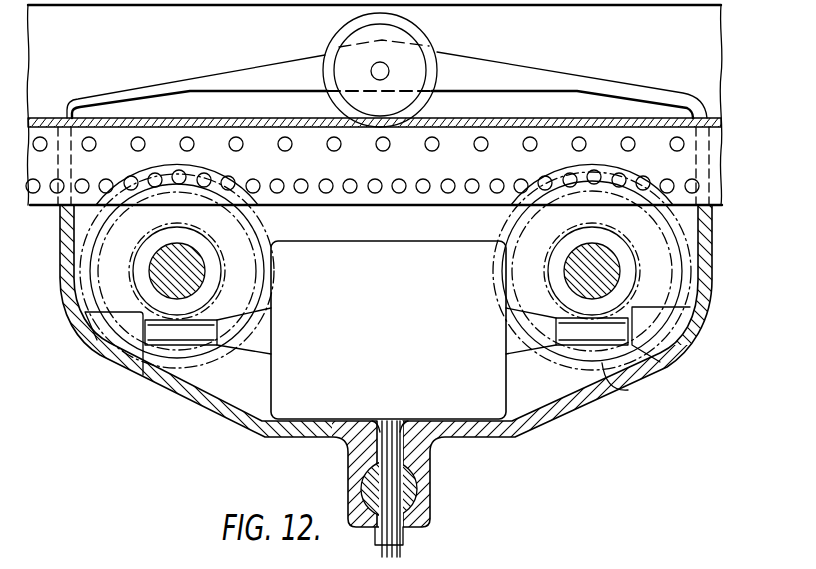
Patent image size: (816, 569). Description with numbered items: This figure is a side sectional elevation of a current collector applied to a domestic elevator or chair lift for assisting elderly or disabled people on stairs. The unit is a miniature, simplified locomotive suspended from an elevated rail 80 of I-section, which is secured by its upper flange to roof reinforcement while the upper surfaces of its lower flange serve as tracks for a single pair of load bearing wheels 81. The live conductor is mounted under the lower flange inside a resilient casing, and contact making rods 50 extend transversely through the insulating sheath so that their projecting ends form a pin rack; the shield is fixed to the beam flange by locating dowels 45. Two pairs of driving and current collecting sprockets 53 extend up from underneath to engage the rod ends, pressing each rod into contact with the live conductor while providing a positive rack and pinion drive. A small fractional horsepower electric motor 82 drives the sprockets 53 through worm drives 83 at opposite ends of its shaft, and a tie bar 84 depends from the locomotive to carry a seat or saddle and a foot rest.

The rail 80 is at (648, 48).
The load bearing wheels 81 is at (430, 43).
The locating dowels 45 is at (680, 138).
The contact making rods 50 is at (691, 179).
The electric motor 82 is at (473, 403).
The worm drives 83 is at (617, 335).
The sprockets 53 is at (620, 387).
The tie bar 84 is at (403, 540).